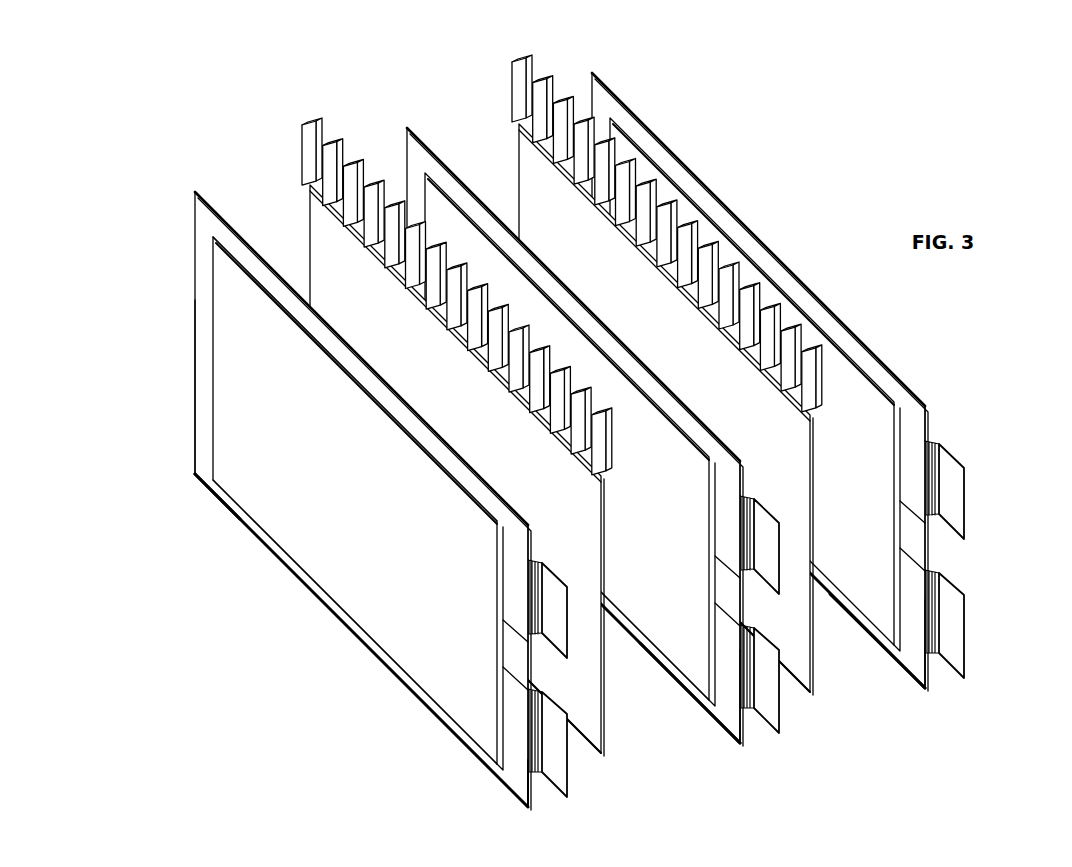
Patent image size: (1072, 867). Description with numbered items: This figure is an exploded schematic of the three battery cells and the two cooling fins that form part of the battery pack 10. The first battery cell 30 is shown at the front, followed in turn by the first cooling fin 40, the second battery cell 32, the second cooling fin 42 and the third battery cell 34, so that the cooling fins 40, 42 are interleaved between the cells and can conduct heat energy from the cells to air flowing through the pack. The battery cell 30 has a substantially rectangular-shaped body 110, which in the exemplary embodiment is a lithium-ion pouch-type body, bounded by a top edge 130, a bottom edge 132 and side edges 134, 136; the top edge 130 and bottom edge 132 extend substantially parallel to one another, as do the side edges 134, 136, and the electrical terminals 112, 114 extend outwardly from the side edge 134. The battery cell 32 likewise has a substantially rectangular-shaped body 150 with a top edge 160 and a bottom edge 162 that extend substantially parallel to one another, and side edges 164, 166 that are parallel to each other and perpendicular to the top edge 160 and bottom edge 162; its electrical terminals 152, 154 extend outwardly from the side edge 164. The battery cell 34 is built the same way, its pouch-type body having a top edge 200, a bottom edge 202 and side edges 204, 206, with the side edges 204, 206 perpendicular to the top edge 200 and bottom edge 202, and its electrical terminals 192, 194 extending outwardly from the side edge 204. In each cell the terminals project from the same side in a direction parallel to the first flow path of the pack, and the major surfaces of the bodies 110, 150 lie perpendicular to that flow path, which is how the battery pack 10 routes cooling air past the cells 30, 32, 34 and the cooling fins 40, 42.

The battery pack 10 is at (571, 438).
The battery cell 30 is at (343, 491).
The battery cell 32 is at (632, 442).
The battery cell 34 is at (816, 407).
The cooling fin 40 is at (476, 440).
The cooling fin 42 is at (682, 380).
The substantially rectangular-shaped body 110 is at (426, 678).
The electrical terminal 112 is at (557, 590).
The electrical terminal 114 is at (556, 772).
The top edge 130 is at (226, 220).
The bottom edge 132 is at (220, 500).
The side edge 134 is at (527, 806).
The side edge 136 is at (195, 378).
The substantially rectangular-shaped body 150 is at (679, 663).
The electrical terminal 152 is at (768, 578).
The electrical terminal 154 is at (780, 722).
The top edge 160 is at (430, 152).
The bottom edge 162 is at (715, 733).
The side edge 164 is at (760, 740).
The side edge 166 is at (400, 152).
The electrical terminal 192 is at (953, 507).
The electrical terminal 194 is at (953, 652).
The top edge 200 is at (611, 90).
The bottom edge 202 is at (892, 662).
The side edge 204 is at (927, 683).
The side edge 206 is at (588, 84).